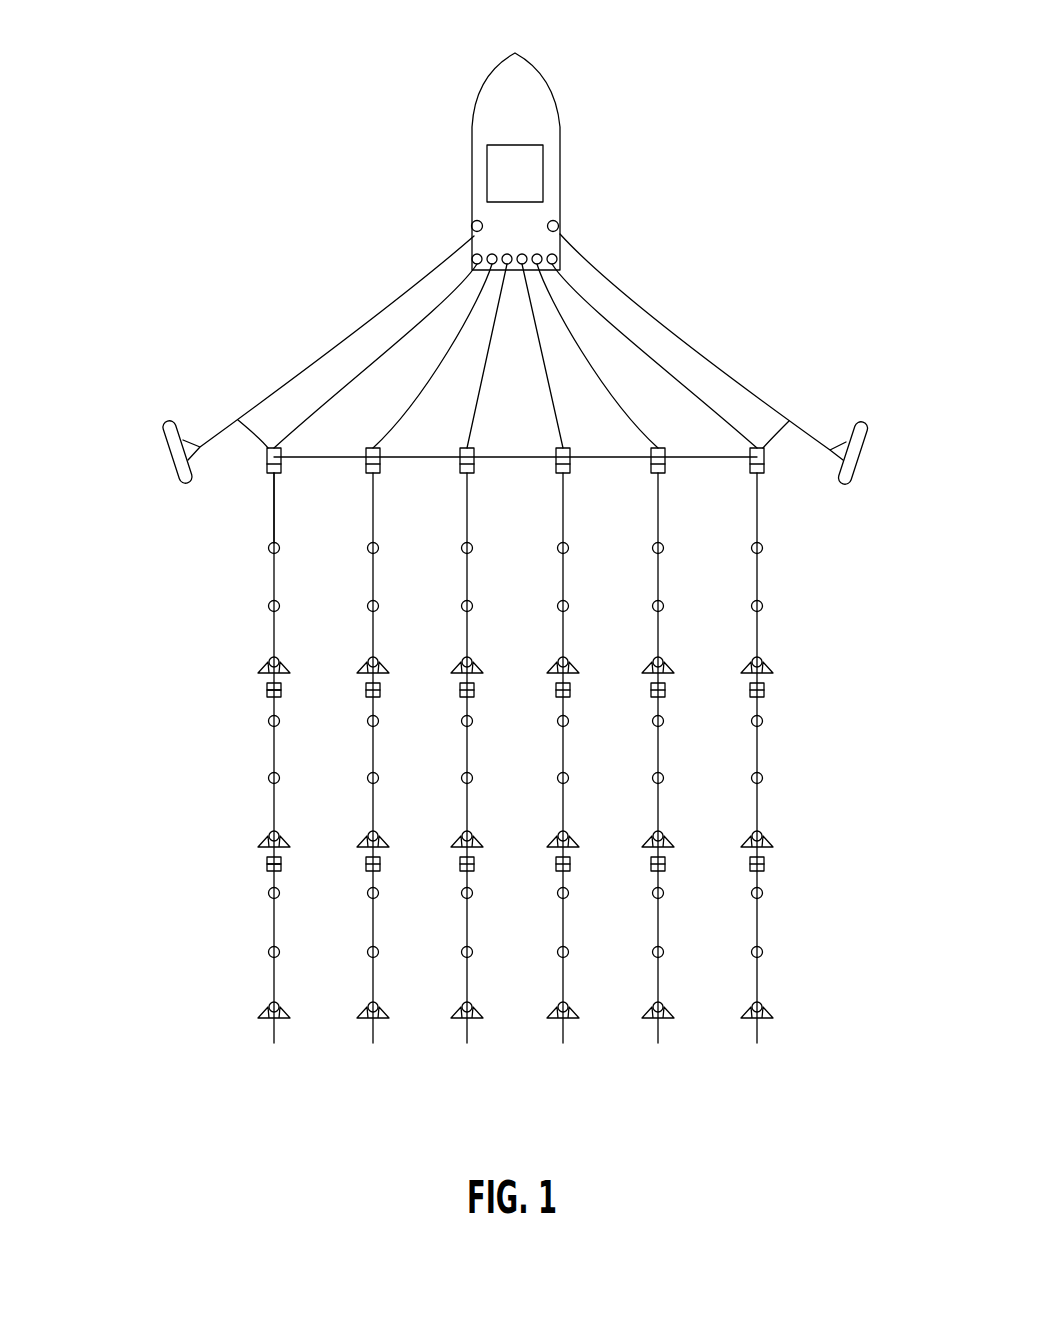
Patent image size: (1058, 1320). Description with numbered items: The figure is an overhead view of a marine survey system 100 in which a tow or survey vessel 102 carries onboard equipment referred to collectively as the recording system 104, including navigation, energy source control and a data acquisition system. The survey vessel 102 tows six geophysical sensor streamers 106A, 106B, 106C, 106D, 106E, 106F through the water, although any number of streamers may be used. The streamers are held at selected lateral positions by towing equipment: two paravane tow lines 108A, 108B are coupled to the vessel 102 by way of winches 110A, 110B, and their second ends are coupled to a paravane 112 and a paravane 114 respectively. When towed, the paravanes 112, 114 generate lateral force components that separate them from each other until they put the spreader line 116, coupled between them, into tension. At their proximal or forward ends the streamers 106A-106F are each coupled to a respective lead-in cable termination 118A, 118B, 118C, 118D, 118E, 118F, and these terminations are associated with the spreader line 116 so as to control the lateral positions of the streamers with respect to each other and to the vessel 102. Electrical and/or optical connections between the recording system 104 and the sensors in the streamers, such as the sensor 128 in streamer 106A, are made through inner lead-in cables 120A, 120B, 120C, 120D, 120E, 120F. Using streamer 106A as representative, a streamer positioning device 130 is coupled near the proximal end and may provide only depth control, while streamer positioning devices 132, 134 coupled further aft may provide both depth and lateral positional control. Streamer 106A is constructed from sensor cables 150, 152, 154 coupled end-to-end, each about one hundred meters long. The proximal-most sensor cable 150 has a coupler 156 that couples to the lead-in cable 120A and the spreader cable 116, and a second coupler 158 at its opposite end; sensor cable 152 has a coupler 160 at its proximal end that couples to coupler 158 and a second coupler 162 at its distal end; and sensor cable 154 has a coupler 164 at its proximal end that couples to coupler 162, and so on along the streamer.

The marine survey system 100 is at (333, 88).
The survey vessel 102 is at (478, 100).
The recording system 104 is at (532, 145).
The geophysical sensor streamer 106A is at (224, 798).
The geophysical sensor streamer 106B is at (372, 1050).
The geophysical sensor streamer 106C is at (466, 1050).
The geophysical sensor streamer 106D is at (563, 1050).
The geophysical sensor streamer 106E is at (658, 1050).
The geophysical sensor streamer 106F is at (757, 1050).
The paravane tow line 108A is at (437, 270).
The paravane tow line 108B is at (603, 275).
The winch 110A is at (472, 225).
The winch 110B is at (558, 225).
The paravane 112 is at (167, 452).
The paravane 114 is at (861, 455).
The spreader line 116 is at (497, 462).
The lead-in cable termination 118A is at (265, 463).
The lead-in cable termination 118B is at (368, 474).
The lead-in cable termination 118C is at (462, 474).
The lead-in cable termination 118D is at (568, 474).
The lead-in cable termination 118E is at (664, 474).
The lead-in cable termination 118F is at (763, 474).
The lead-in cable 120A is at (437, 312).
The lead-in cable 120B is at (450, 348).
The lead-in cable 120C is at (477, 413).
The lead-in cable 120D is at (557, 422).
The lead-in cable 120E is at (590, 360).
The lead-in cable 120F is at (593, 310).
The sensor 128 is at (268, 549).
The streamer positioning device 130 is at (258, 670).
The streamer positioning device 132 is at (258, 845).
The streamer positioning device 134 is at (252, 1015).
The sensor cable 150 is at (211, 613).
The sensor cable 152 is at (196, 788).
The sensor cable 154 is at (199, 969).
The coupler 156 is at (270, 478).
The second coupler 158 is at (282, 687).
The coupler 160 is at (282, 693).
The second coupler 162 is at (282, 861).
The coupler 164 is at (282, 867).